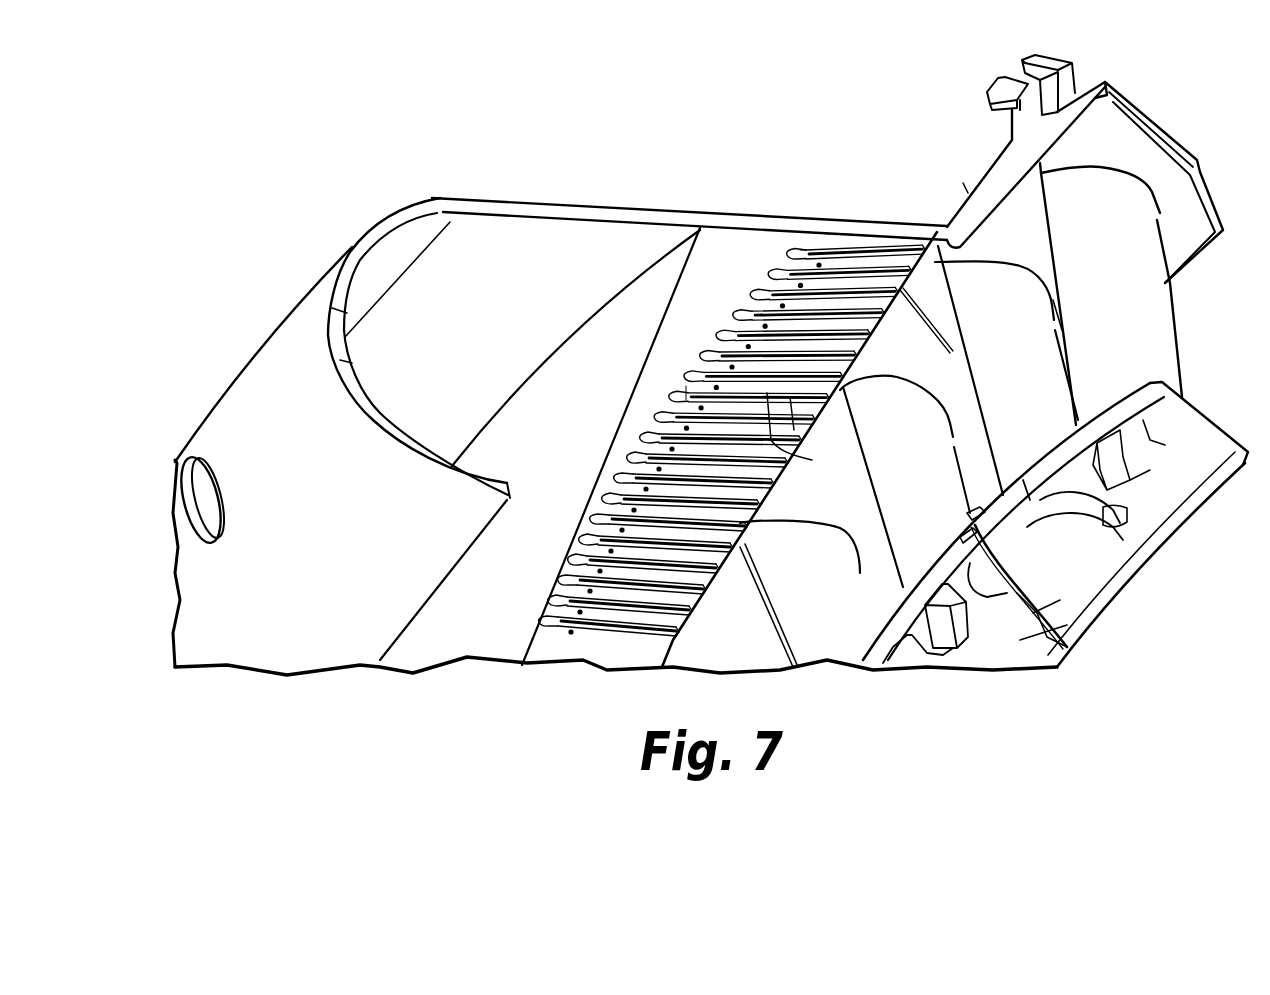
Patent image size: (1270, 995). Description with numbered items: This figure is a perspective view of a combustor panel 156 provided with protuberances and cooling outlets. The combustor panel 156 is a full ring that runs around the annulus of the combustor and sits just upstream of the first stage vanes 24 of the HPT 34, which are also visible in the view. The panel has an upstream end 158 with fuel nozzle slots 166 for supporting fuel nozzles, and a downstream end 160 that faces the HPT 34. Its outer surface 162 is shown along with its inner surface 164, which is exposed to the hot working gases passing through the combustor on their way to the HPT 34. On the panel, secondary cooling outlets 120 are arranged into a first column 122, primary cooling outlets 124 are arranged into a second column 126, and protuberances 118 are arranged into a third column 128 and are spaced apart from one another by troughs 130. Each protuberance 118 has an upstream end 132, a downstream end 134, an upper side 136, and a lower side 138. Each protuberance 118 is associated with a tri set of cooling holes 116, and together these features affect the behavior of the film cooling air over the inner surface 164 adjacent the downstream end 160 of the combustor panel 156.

The first stage vanes 24 is at (1152, 315).
The HPT 34 is at (1191, 126).
The cooling holes 116 is at (590, 560).
The protuberances 118 is at (800, 395).
The secondary cooling outlets 120 is at (808, 251).
The first column 122 is at (824, 229).
The primary cooling outlets 124 is at (818, 263).
The second column 126 is at (860, 230).
The third column 128 is at (906, 232).
The troughs 130 is at (900, 270).
The upstream end 132 is at (686, 392).
The downstream end 134 is at (850, 377).
The upper side 136 is at (770, 436).
The lower side 138 is at (797, 418).
The combustor panel 156 is at (732, 358).
The upstream end 158 is at (273, 338).
The downstream end 160 is at (950, 251).
The outer surface 162 is at (584, 192).
The inner surface 164 is at (477, 640).
The fuel nozzle slots 166 is at (197, 467).